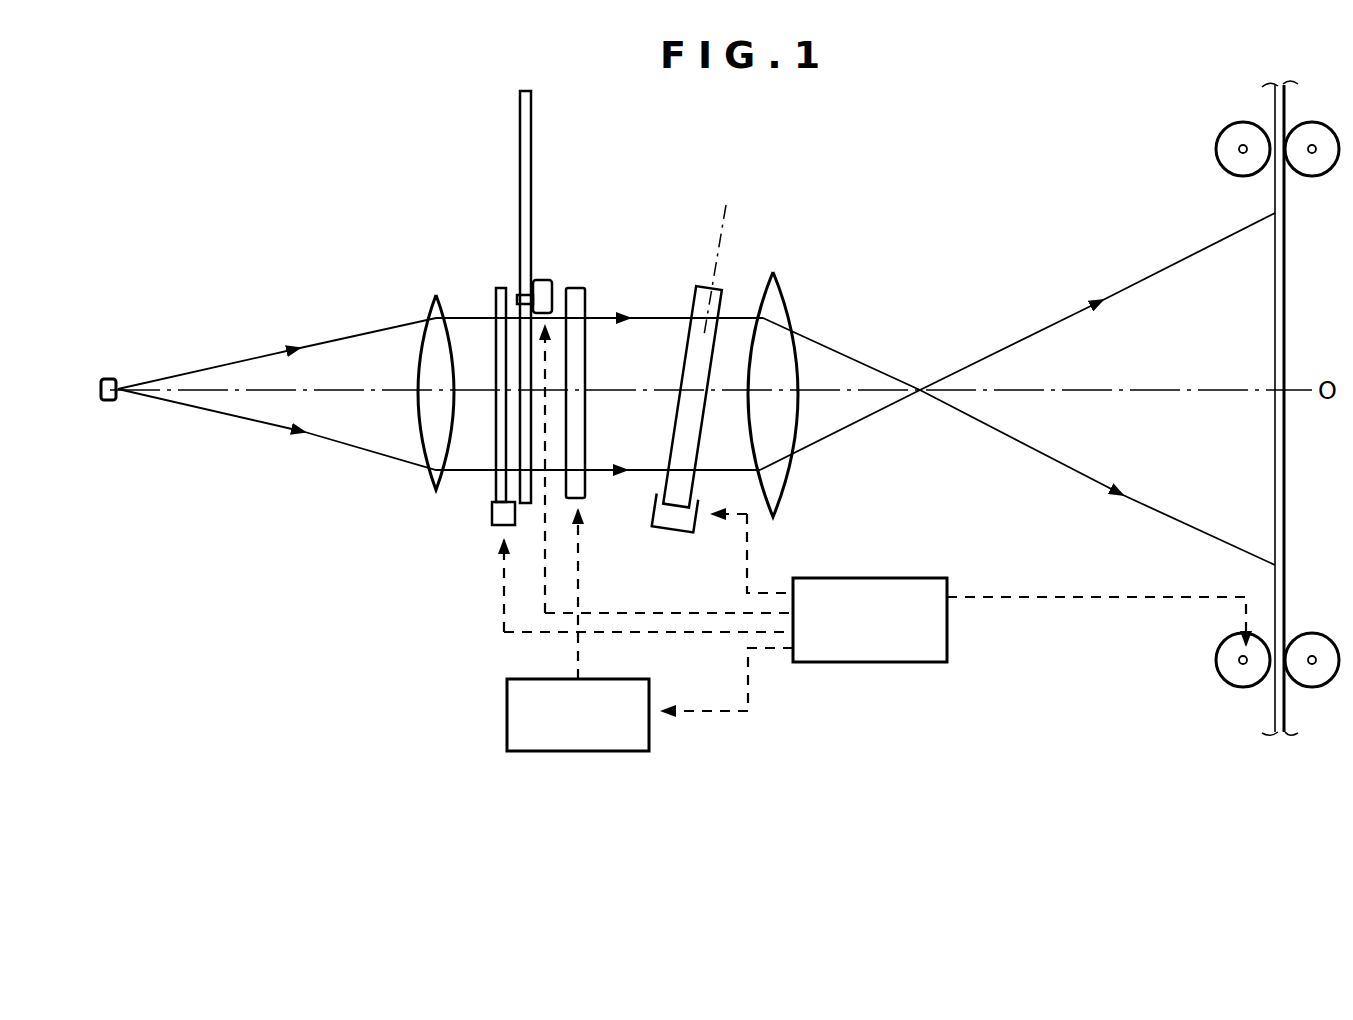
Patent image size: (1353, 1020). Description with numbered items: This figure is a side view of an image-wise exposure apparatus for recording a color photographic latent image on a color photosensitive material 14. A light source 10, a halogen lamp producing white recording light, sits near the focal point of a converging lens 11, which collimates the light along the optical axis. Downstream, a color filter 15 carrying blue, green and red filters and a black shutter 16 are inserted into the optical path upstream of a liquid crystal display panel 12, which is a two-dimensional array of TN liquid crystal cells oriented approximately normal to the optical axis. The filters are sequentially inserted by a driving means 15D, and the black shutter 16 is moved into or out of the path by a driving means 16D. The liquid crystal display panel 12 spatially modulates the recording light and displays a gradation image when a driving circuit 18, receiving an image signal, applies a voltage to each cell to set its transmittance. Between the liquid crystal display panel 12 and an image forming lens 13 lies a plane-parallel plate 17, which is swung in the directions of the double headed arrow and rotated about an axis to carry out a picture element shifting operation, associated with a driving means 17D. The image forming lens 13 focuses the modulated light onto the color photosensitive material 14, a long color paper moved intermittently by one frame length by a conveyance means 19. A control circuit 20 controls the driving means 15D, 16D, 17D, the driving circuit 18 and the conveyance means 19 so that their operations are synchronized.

The light source 10 is at (115, 379).
The converging lens 11 is at (428, 310).
The liquid crystal display panel 12 is at (584, 290).
The image forming lens 13 is at (786, 301).
The color photosensitive material 14 is at (1275, 318).
The color filter 15 is at (532, 200).
The driving means 15D is at (542, 280).
The black shutter 16 is at (501, 288).
The driving means 16D is at (492, 514).
The plane-parallel plate 17 is at (700, 290).
The driving means 17D is at (698, 546).
The driving circuit 18 is at (650, 699).
The conveyance means 19 is at (1216, 660).
The control circuit 20 is at (885, 640).